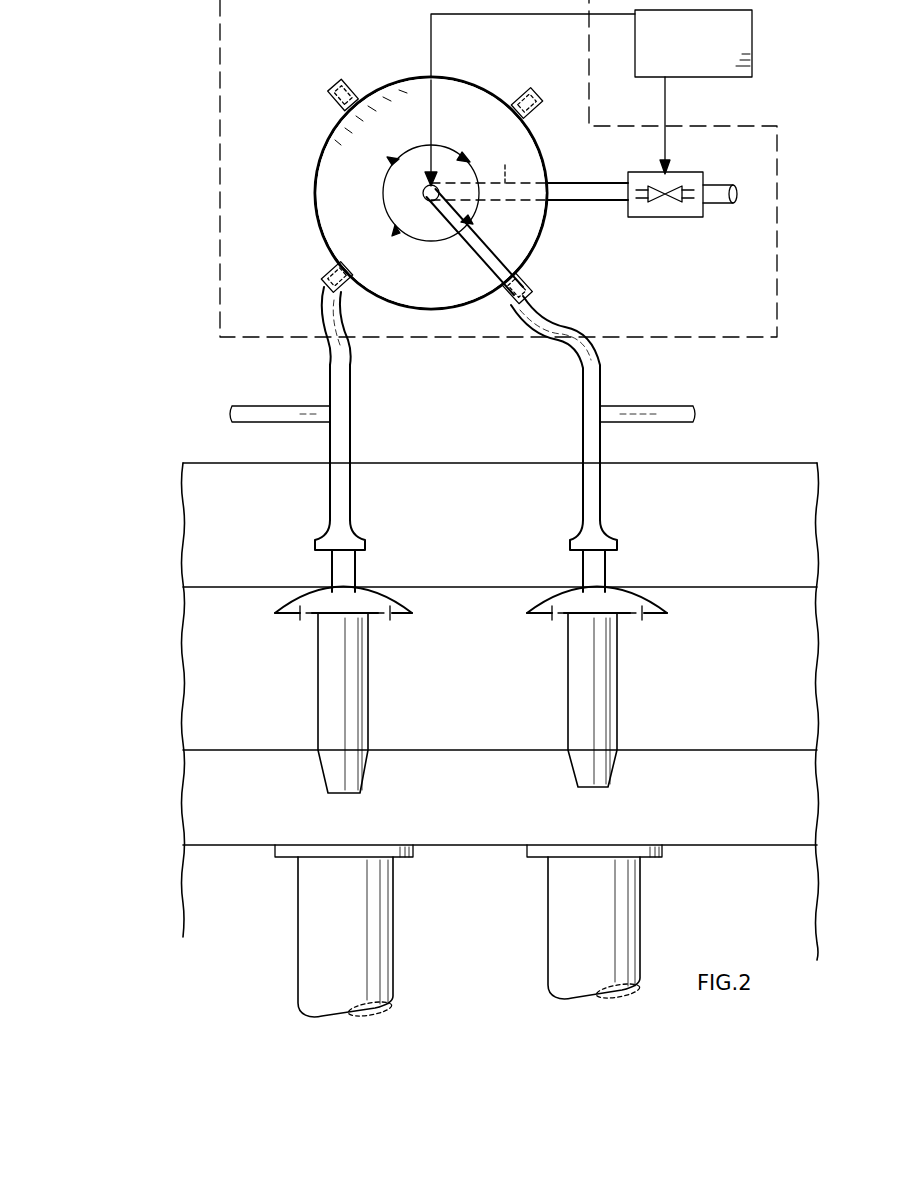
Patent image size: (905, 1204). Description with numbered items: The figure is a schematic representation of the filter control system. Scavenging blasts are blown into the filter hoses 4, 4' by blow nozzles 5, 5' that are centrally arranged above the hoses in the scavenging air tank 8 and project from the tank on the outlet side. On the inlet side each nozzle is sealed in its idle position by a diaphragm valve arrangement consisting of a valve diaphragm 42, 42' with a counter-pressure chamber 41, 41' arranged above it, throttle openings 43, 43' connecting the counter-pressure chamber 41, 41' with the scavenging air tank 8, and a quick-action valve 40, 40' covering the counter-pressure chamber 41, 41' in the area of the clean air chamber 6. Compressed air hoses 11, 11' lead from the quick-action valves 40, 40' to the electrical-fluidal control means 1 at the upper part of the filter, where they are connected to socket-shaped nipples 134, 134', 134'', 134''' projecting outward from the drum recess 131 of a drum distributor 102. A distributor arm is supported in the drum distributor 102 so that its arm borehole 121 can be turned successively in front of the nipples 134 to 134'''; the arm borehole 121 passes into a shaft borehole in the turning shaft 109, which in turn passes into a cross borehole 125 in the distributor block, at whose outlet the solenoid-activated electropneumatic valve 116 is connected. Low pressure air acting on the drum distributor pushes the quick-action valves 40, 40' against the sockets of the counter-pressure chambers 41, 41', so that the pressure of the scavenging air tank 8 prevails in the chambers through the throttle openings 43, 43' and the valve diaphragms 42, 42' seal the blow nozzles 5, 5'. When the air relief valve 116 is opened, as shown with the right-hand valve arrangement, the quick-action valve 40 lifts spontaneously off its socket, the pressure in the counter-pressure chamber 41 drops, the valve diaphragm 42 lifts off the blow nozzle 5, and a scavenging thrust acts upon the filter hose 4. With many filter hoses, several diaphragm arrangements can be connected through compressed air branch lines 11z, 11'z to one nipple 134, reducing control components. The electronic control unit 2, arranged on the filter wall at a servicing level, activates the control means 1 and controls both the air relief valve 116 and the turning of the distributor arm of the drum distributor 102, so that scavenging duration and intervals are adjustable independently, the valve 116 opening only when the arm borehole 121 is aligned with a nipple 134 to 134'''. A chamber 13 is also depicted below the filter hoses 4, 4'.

The electrical-fluidal control means 1 is at (272, 34).
The electronic control unit 2 is at (700, 52).
The drum distributor 102 is at (310, 136).
The drum recess 131 is at (345, 190).
The socket-shaped nipple 134 is at (539, 284).
The socket-shaped nipple 134' is at (315, 265).
The socket-shaped nipple 134'' is at (369, 79).
The socket-shaped nipple 134''' is at (522, 82).
The turning shaft 109 is at (395, 223).
The arm borehole 121 is at (478, 250).
The cross borehole 125 is at (489, 171).
The electropneumatic valve 116 is at (672, 210).
The compressed air hose 11 is at (575, 408).
The compressed air hose 11' is at (360, 403).
The compressed air branch line 11z is at (680, 410).
The compressed air branch line 11'z is at (274, 396).
The quick-action valve 40 is at (611, 544).
The quick-action valve 40' is at (357, 544).
The clean air chamber 6 is at (481, 536).
The scavenging air tank 8 is at (481, 702).
The combustion chamber 13 is at (484, 950).
The throttle opening 43 is at (613, 621).
The throttle opening 43' is at (320, 621).
The counter-pressure chamber 41 is at (548, 637).
The counter-pressure chamber 41' is at (298, 637).
The valve diaphragm 42 is at (640, 637).
The valve diaphragm 42' is at (397, 637).
The blow nozzle 5 is at (578, 700).
The blow nozzle 5' is at (327, 703).
The filter hose 4 is at (579, 929).
The filter hose 4' is at (328, 938).